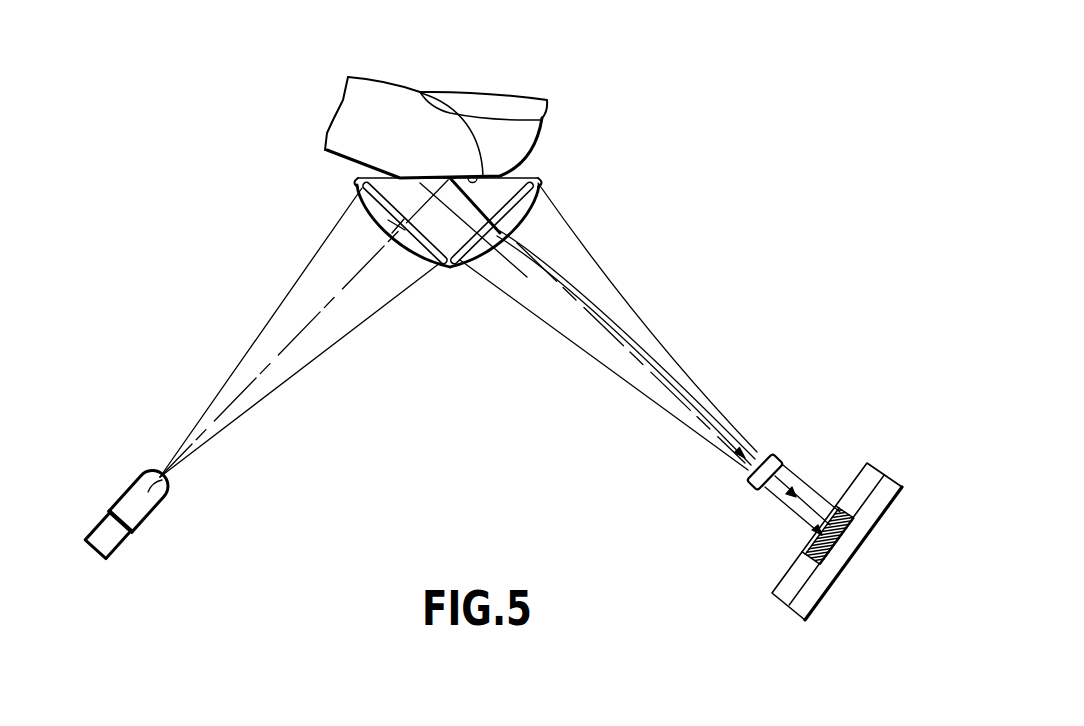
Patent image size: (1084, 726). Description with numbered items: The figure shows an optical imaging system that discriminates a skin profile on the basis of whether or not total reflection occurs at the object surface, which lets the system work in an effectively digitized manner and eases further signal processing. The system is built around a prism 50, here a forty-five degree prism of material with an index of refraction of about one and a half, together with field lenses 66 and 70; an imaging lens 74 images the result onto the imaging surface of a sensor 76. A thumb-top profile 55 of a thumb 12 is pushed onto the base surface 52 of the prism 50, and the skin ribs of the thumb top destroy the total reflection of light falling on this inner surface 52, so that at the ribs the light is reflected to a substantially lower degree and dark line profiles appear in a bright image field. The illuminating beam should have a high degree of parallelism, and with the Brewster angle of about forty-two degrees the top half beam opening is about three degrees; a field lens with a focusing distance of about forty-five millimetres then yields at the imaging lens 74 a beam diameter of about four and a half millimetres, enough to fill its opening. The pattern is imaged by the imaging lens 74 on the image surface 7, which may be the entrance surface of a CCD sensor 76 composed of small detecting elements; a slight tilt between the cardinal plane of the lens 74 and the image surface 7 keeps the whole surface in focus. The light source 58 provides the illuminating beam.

The thumb 12 is at (350, 127).
The thumb-top profile 55 is at (423, 168).
The base surface 52 is at (483, 177).
The prism 50 is at (362, 189).
The field lens 70 is at (515, 203).
The field lens 66 is at (403, 185).
The light source 58 is at (146, 500).
The imaging lens 74 is at (750, 485).
The sensor 76 is at (837, 512).
The image surface 7 is at (806, 545).